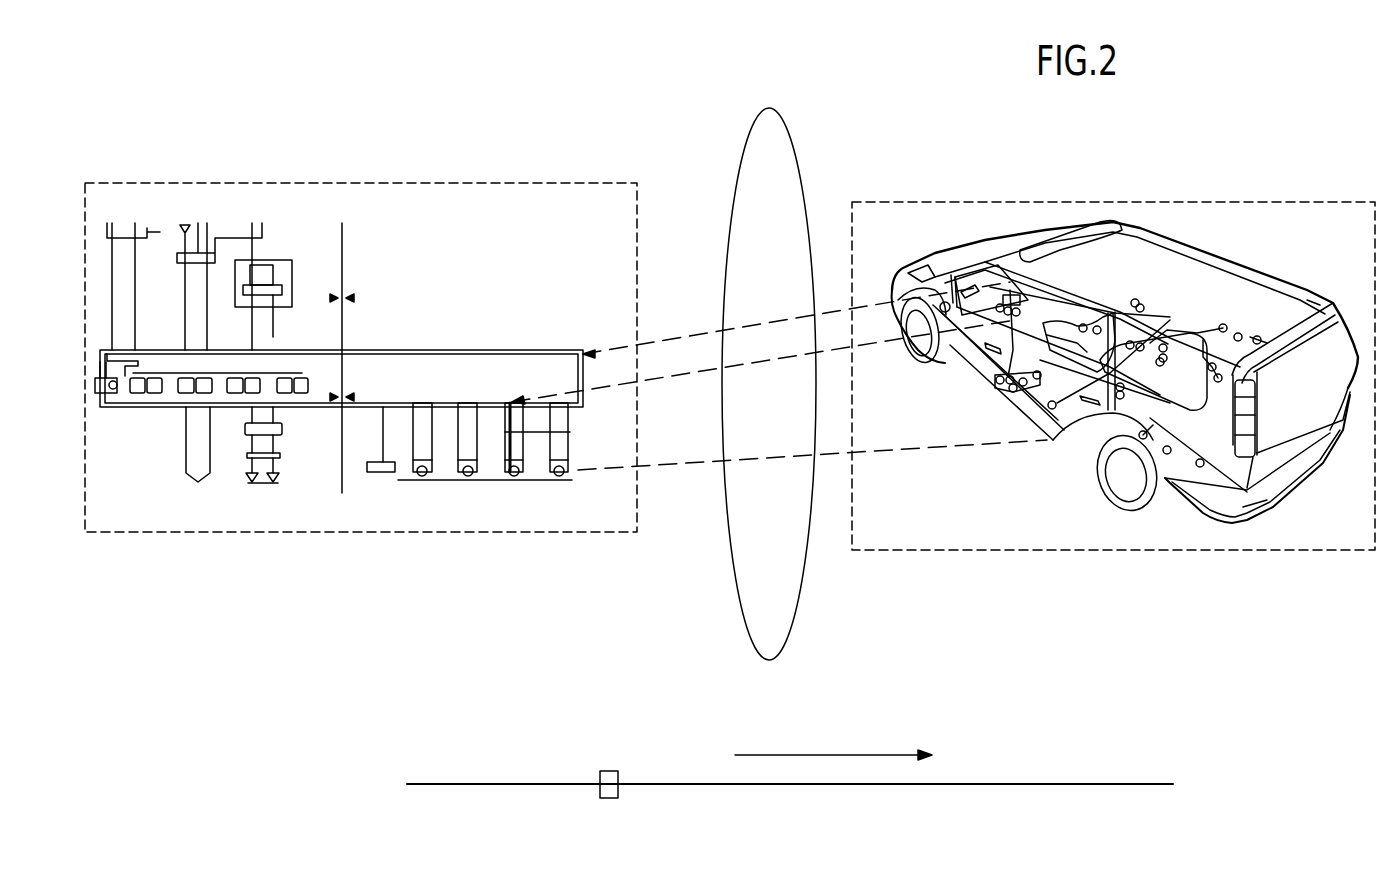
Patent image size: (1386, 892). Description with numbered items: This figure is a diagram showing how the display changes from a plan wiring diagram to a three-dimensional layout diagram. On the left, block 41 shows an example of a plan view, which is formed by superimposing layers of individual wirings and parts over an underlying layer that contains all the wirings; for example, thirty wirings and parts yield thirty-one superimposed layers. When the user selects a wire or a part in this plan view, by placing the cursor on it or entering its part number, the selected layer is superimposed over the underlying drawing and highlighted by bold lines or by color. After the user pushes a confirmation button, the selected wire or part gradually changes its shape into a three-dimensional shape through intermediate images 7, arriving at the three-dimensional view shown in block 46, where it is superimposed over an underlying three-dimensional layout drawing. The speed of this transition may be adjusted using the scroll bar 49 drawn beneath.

The intermediate images 7 is at (788, 128).
The block showing plan view 41 is at (566, 353).
The block showing three-dimensional view 46 is at (1115, 369).
The scroll bar 49 is at (1209, 795).